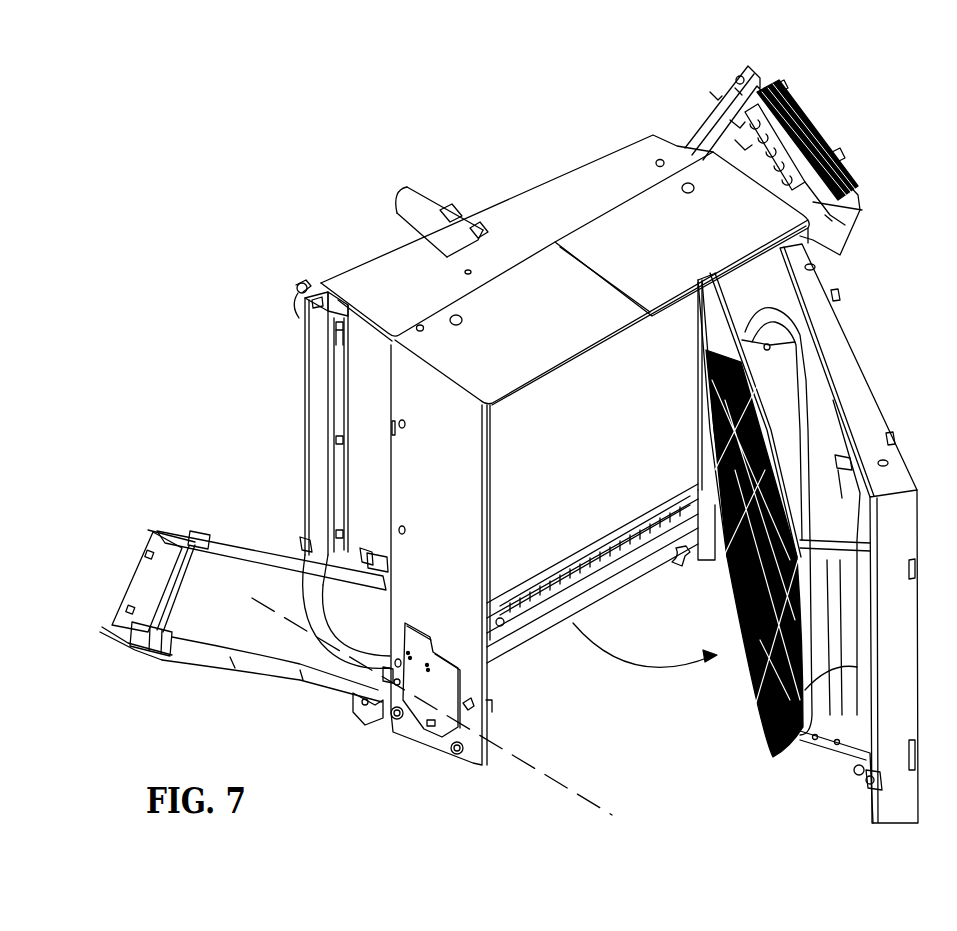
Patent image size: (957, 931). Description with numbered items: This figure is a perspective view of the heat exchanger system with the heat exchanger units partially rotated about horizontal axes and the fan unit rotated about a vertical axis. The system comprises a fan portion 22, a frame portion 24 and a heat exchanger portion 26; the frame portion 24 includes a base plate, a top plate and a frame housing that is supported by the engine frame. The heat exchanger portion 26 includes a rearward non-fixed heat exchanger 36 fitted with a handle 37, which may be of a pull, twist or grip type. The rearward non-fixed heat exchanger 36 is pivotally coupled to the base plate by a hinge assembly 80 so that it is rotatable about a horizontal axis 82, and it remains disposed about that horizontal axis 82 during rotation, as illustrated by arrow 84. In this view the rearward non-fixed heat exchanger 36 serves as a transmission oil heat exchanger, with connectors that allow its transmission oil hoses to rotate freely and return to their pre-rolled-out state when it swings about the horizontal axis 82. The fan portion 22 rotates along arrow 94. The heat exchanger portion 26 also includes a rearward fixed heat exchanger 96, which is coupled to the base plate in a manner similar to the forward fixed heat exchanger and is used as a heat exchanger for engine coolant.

The fan portion 22 is at (822, 782).
The frame portion 24 is at (840, 147).
The heat exchanger portion 26 is at (755, 50).
The rearward non-fixed heat exchanger 36 is at (198, 512).
The handle 37 is at (243, 673).
The hinge assembly 80 is at (380, 720).
The horizontal axis 82 is at (512, 750).
The arrow 84 is at (317, 587).
The arrow 94 is at (658, 666).
The rearward fixed heat exchanger 96 is at (528, 535).